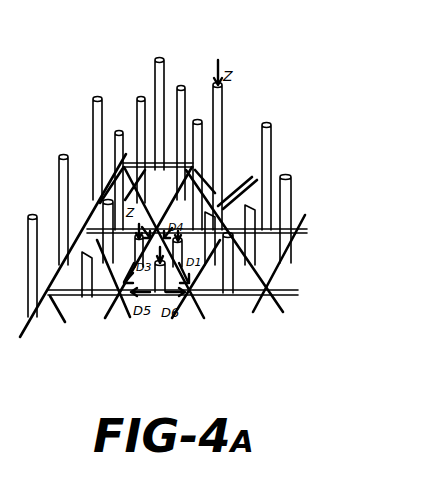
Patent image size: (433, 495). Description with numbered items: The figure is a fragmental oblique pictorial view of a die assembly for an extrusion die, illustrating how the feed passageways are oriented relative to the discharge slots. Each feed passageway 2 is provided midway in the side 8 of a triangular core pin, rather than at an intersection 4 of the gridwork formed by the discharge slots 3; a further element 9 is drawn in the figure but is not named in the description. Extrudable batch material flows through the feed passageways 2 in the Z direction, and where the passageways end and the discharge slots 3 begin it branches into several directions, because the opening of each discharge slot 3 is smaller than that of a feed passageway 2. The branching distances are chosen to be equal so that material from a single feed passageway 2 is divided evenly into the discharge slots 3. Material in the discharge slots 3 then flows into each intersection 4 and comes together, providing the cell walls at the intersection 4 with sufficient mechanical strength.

The feed passageway 2 is at (58, 195).
The discharge slot 3 is at (268, 298).
The intersection 4 is at (157, 226).
The side 8 is at (73, 300).
The short tube 9 is at (163, 295).